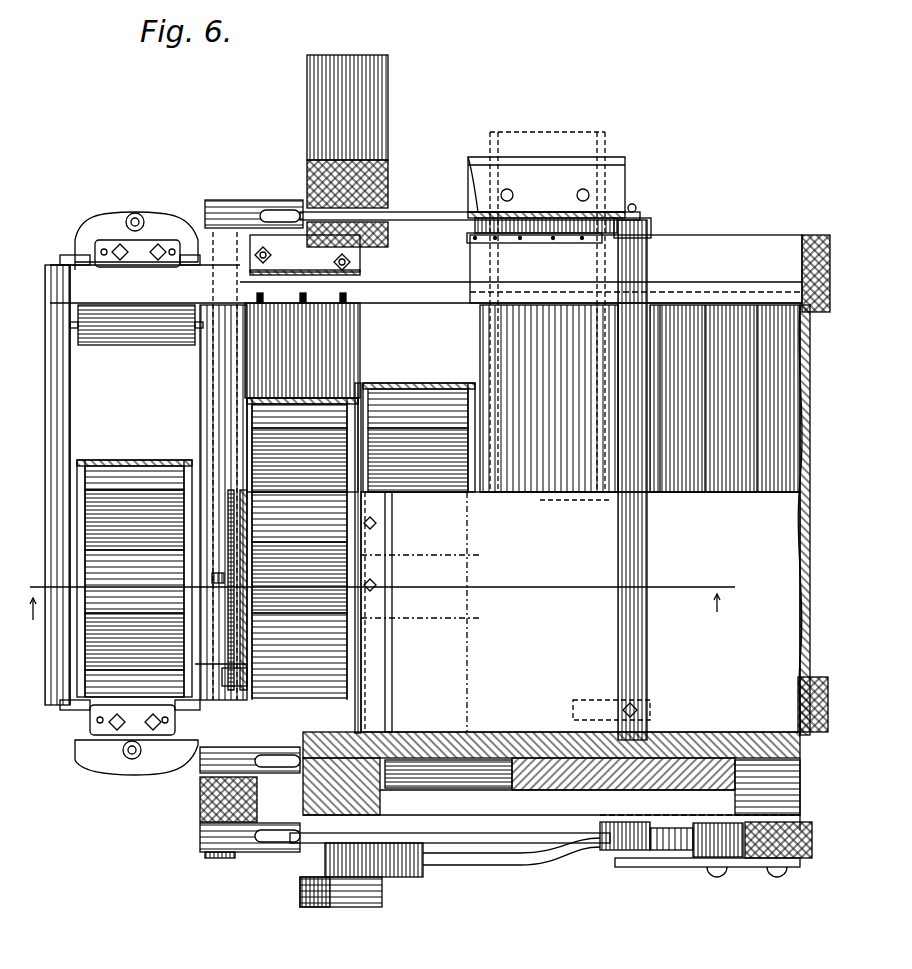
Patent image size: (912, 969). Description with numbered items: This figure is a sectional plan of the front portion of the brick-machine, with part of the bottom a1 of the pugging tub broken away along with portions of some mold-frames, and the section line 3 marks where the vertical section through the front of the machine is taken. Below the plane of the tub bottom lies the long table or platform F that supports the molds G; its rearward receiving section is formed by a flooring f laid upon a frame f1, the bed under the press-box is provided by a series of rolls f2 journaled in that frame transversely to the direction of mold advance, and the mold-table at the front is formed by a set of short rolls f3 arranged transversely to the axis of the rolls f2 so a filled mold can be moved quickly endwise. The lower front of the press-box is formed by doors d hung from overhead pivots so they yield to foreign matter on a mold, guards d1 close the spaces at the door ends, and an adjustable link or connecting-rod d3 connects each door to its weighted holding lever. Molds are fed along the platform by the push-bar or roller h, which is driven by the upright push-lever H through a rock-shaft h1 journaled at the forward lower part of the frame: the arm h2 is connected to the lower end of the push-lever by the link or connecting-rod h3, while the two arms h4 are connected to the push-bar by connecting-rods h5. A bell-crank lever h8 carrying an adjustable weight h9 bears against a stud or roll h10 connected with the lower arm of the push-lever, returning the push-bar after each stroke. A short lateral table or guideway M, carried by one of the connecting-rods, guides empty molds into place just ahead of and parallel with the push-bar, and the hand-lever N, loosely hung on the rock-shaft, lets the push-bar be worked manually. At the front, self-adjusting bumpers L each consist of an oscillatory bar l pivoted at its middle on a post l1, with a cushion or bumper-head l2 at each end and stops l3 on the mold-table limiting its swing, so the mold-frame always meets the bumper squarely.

The table or platform F is at (813, 520).
The self-adjusting bumper L is at (129, 493).
The oscillatory bar l is at (135, 487).
The post or support l1 is at (135, 214).
The cushion or bumper-head l2 is at (46, 716).
The stop l3 is at (104, 248).
The short rolls f3 is at (136, 325).
The mold G is at (276, 541).
The rolls f2 is at (302, 345).
The flooring f is at (640, 398).
The frame f1 is at (636, 292).
The push-bar or roller h is at (632, 479).
The lateral table or guideway M is at (556, 312).
The links or connecting-rods h5 is at (415, 212).
The arms h4 is at (270, 208).
The hand-lever N is at (205, 806).
The arm h2 is at (262, 840).
The rock-shaft h1 is at (222, 858).
The link or connecting-rod h3 is at (450, 831).
The bell-crank lever h8 is at (511, 864).
The adjustable weight h9 is at (361, 875).
The stud or roll h10 is at (671, 839).
The push-lever H is at (778, 840).
The door d is at (223, 466).
The link or connecting-rod d3 is at (213, 570).
The guard d1 is at (195, 664).
The bottom a1 is at (580, 612).
The section line 3 is at (374, 598).